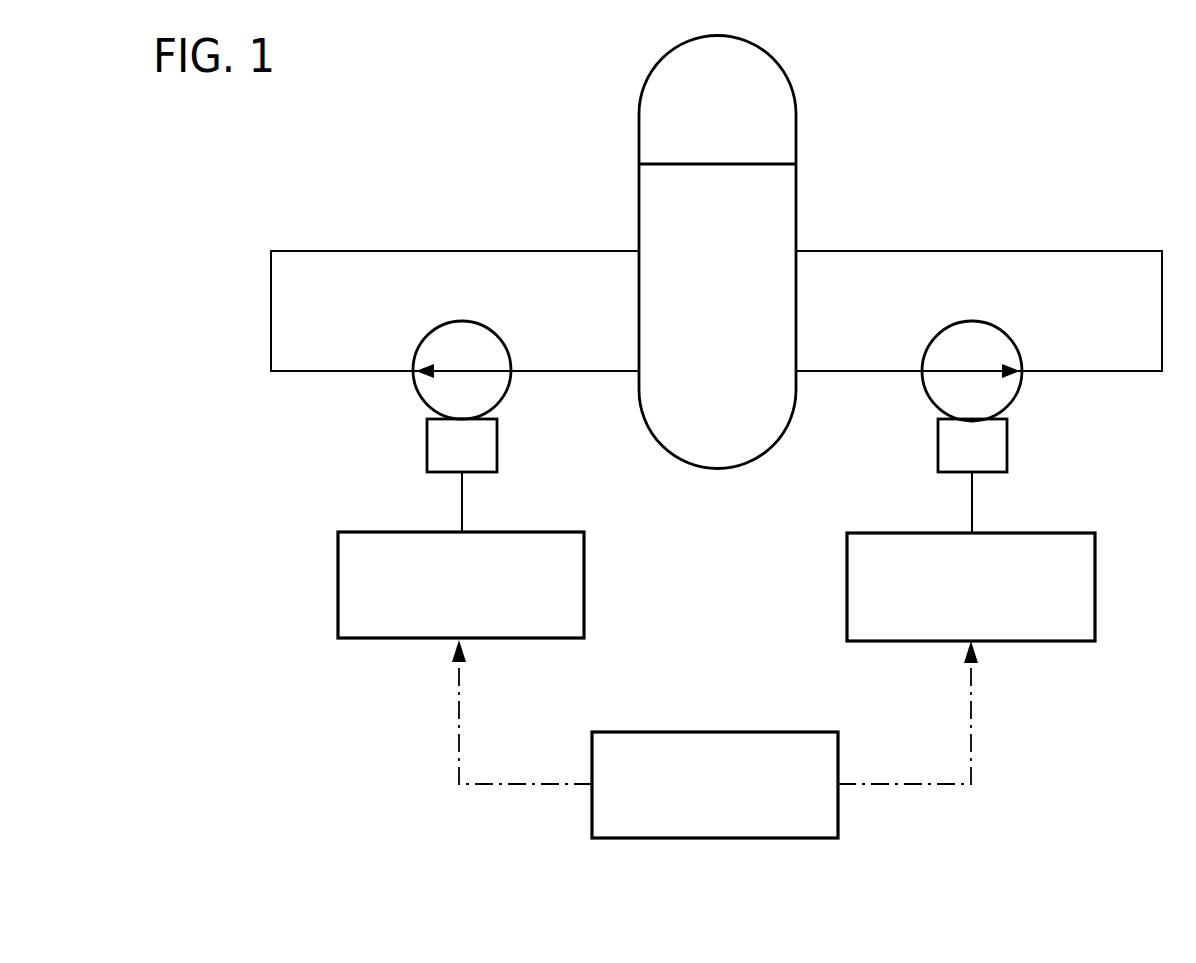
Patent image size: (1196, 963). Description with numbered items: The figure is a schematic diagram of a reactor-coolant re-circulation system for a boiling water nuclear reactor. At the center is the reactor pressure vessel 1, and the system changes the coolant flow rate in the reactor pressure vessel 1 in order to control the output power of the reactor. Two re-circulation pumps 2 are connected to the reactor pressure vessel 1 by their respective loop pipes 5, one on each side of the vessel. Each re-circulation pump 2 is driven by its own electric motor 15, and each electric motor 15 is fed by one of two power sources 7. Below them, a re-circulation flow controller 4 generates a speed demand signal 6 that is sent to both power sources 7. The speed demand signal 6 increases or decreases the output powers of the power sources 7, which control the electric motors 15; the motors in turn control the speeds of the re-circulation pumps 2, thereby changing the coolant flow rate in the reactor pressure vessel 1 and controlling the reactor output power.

The reactor pressure vessel 1 is at (639, 117).
The loop pipe 5 is at (383, 250).
The re-circulation pump 2 is at (414, 386).
The electric motor 15 is at (427, 441).
The power source 7 is at (372, 640).
The speed demand signal 6 is at (526, 783).
The re-circulation flow controller 4 is at (713, 732).